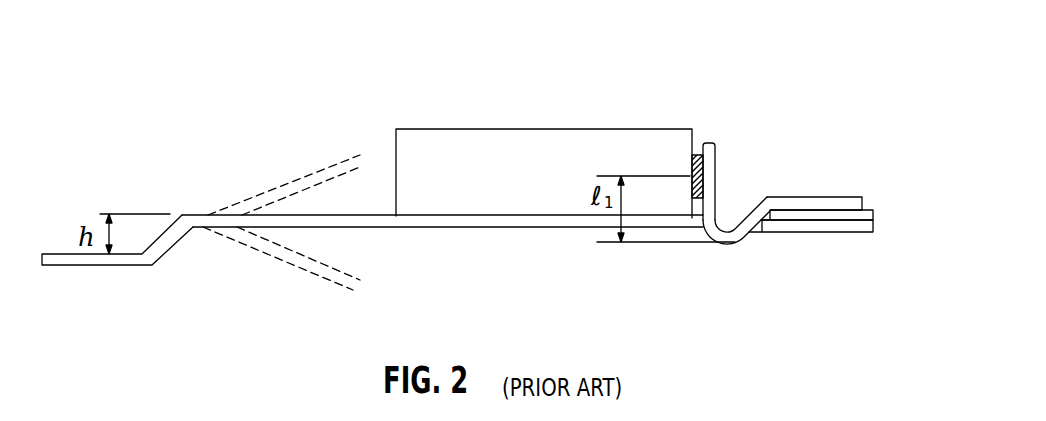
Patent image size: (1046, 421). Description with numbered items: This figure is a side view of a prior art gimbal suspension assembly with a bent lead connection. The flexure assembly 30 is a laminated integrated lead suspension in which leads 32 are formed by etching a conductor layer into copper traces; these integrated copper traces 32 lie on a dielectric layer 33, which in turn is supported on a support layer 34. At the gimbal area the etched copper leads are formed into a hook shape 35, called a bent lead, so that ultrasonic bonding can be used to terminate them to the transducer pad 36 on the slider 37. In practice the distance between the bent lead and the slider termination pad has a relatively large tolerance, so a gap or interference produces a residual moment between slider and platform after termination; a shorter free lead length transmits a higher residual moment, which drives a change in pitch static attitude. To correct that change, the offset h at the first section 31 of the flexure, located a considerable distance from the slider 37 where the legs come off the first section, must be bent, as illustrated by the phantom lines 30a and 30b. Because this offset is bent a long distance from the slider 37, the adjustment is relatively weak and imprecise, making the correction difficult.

The flexure assembly 30 is at (330, 92).
The phantom line 30a is at (288, 182).
The phantom line 30b is at (267, 253).
The first section 31 is at (160, 254).
The leads 32 is at (795, 198).
The dielectric layer 33 is at (875, 215).
The support layer 34 is at (878, 225).
The hook shape 35 is at (708, 143).
The transducer pad 36 is at (688, 177).
The slider 37 is at (498, 128).